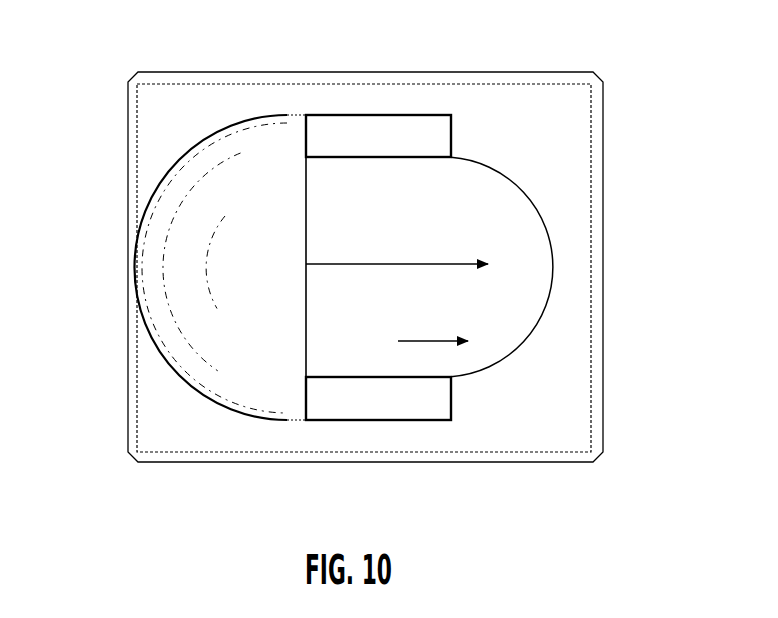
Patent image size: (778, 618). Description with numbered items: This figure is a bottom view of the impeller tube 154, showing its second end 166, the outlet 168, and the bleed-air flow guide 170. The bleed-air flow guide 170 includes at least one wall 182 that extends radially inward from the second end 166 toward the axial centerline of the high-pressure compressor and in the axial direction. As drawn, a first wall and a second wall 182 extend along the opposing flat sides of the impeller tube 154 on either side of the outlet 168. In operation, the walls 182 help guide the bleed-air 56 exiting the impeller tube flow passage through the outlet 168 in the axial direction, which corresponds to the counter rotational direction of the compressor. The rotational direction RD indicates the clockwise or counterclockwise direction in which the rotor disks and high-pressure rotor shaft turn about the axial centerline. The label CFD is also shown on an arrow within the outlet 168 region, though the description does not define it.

The impeller tube 154 is at (503, 62).
The second end 166 is at (573, 133).
The outlet 168 is at (539, 258).
The bleed-air flow guide 170 is at (161, 291).
The wall 182 is at (344, 115).
The bleed-air 56 is at (340, 265).
The cross-flow direction CFD is at (438, 343).
The rotational direction RD is at (534, 313).